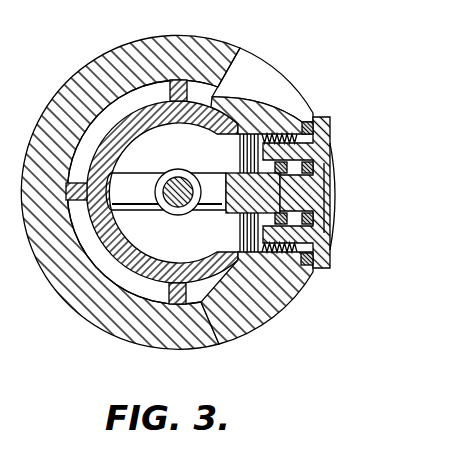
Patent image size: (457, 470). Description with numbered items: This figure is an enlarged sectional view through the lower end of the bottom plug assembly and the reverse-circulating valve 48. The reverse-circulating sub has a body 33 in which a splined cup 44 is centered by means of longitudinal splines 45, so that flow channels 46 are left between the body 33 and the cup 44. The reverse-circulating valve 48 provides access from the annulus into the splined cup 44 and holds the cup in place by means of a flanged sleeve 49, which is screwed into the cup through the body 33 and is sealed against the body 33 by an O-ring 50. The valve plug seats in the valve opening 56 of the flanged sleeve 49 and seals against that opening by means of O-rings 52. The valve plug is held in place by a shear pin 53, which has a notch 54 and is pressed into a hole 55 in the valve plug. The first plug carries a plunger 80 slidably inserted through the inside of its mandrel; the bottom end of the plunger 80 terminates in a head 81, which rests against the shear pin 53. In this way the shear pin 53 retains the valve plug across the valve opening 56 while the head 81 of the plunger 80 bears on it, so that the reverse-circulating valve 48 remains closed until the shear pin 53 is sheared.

The body 33 is at (271, 306).
The splined cup 44 is at (128, 114).
The longitudinal splines 45 is at (211, 97).
The flow channels 46 is at (80, 147).
The reverse-circulating valve 48 is at (331, 251).
The flanged sleeve 49 is at (318, 142).
The O-ring 50 is at (306, 122).
The O-rings 52 is at (237, 210).
The shear pin 53 is at (138, 175).
The notch 54 is at (250, 172).
The hole 55 is at (246, 211).
The valve opening 56 is at (286, 166).
The plunger 80 is at (172, 206).
The head 81 is at (177, 214).